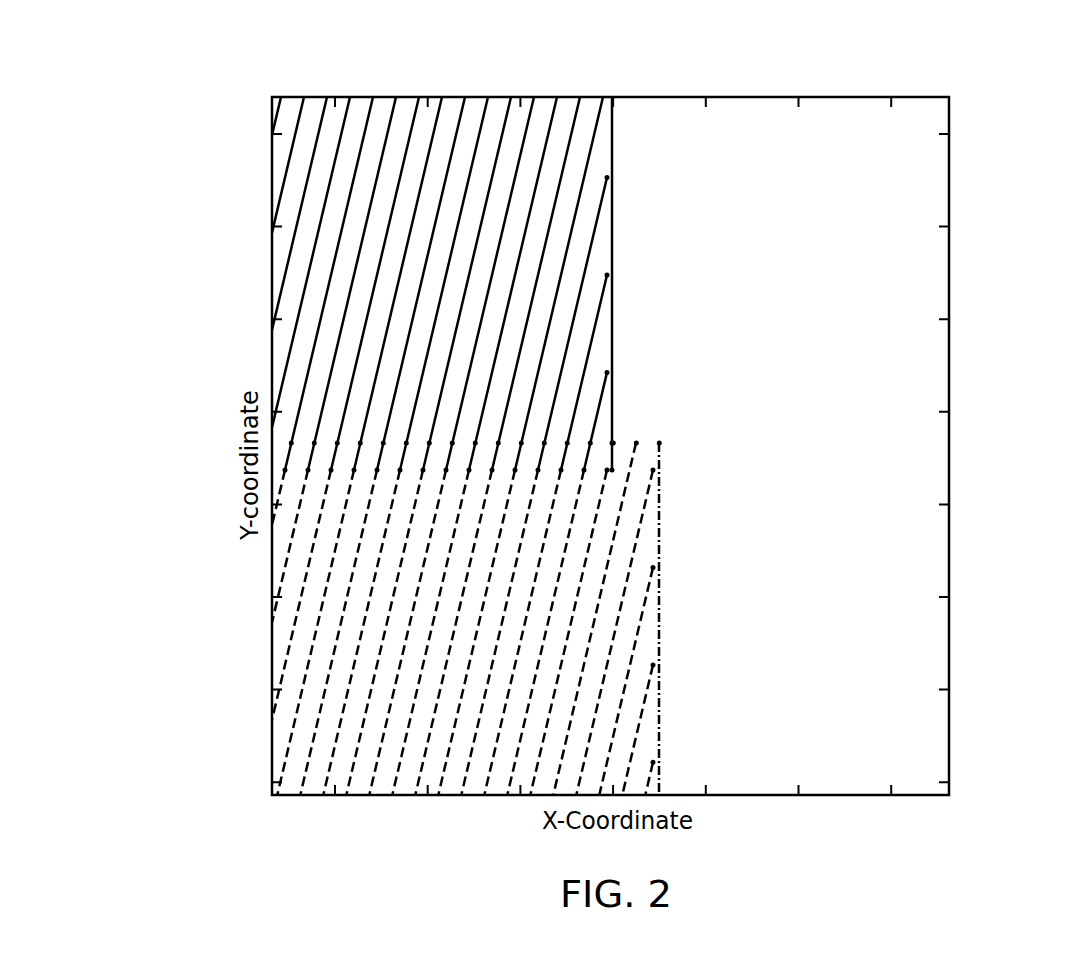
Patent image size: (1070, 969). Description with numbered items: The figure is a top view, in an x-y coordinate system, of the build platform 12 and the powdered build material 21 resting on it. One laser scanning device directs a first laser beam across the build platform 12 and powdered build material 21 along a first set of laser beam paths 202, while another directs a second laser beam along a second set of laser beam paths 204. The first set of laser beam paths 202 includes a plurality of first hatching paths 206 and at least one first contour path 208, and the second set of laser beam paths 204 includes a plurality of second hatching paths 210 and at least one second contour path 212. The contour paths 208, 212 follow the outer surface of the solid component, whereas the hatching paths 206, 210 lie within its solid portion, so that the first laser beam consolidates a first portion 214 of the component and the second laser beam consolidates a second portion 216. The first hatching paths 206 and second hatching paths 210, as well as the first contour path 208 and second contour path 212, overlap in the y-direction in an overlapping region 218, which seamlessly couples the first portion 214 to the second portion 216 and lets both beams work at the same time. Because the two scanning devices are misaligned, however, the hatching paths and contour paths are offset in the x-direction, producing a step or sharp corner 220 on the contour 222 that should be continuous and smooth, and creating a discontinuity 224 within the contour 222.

The build platform 12 is at (828, 213).
The powdered build material 21 is at (360, 218).
The first set of laser beam paths 202 is at (355, 640).
The second set of laser beam paths 204 is at (436, 104).
The first hatching paths 206 is at (375, 747).
The first contour path 208 is at (660, 637).
The second hatching paths 210 is at (345, 313).
The second contour path 212 is at (618, 202).
The first portion 214 is at (308, 557).
The second portion 216 is at (322, 388).
The overlapping region 218 is at (338, 447).
The step or sharp corner 220 is at (650, 412).
The contour 222 is at (715, 440).
The discontinuity 224 is at (715, 457).